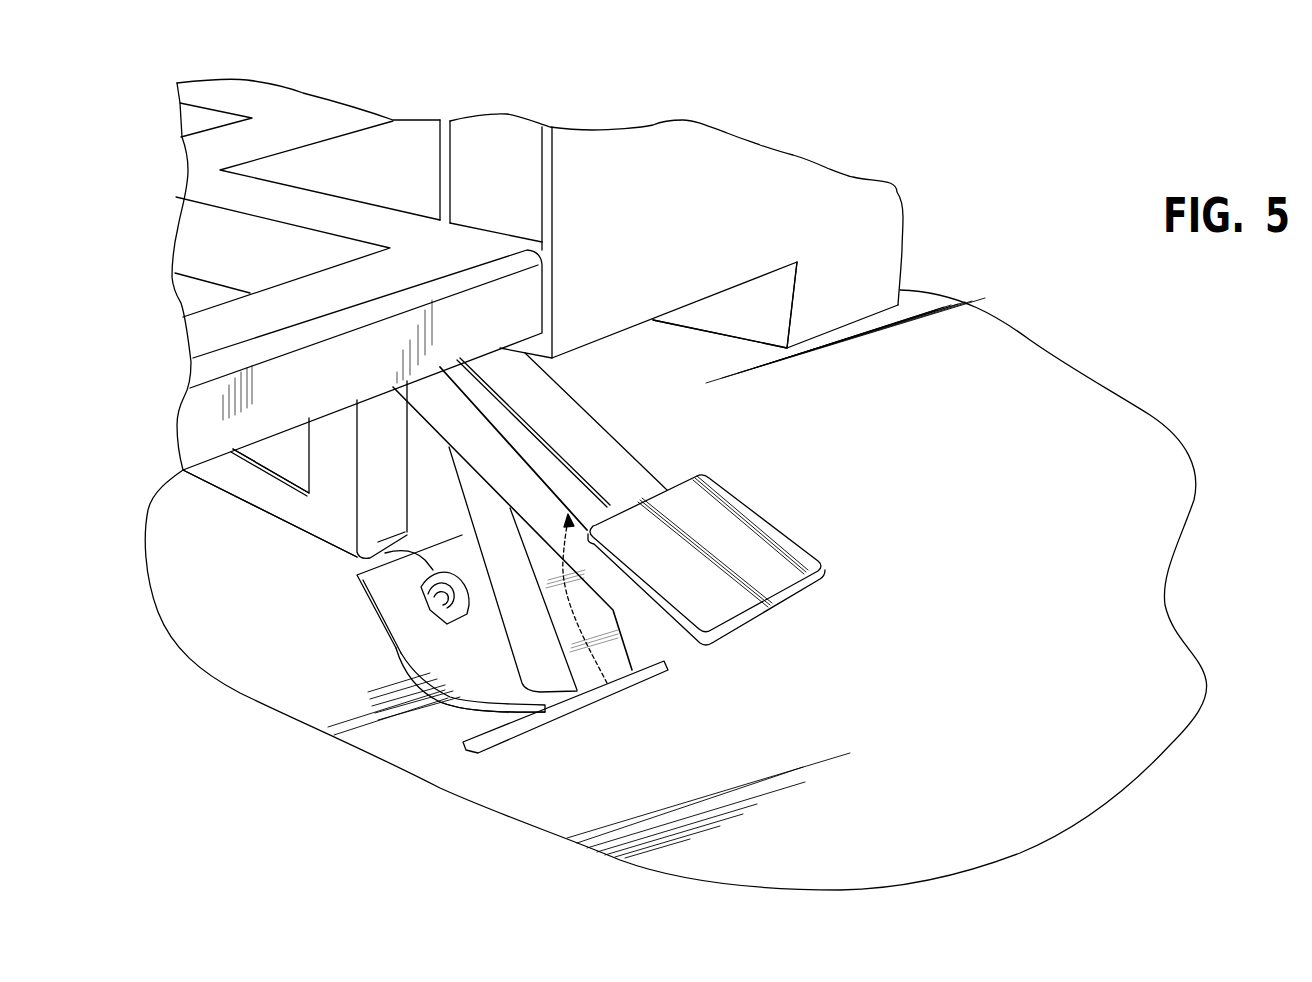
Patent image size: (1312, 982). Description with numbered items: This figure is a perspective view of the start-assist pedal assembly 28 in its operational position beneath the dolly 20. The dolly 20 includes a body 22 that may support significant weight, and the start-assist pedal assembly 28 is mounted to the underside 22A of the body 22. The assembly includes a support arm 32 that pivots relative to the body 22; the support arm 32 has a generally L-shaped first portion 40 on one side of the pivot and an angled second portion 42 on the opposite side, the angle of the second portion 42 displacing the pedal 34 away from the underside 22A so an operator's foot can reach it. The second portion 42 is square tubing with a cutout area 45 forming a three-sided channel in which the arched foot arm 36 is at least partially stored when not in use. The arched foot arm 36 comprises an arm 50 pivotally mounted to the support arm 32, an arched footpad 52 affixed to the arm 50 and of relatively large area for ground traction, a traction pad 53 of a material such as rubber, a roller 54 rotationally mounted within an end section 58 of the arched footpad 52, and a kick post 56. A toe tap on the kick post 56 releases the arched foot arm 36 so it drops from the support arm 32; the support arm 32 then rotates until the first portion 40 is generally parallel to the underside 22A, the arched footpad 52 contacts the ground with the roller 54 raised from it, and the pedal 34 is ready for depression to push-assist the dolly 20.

The dolly 20 is at (609, 115).
The body 22 is at (181, 407).
The underside 22A is at (684, 313).
The start-assist pedal assembly 28 is at (642, 499).
The support arm 32 is at (241, 499).
The pedal 34 is at (780, 536).
The arched foot arm 36 is at (401, 665).
The first portion 40 is at (267, 517).
The second portion 42 is at (569, 423).
The cutout area 45 is at (617, 694).
The arm 50 is at (482, 513).
The arched footpad 52 is at (430, 643).
The traction pad 53 is at (457, 710).
The roller 54 is at (424, 574).
The kick post 56 is at (517, 733).
The end section 58 is at (385, 553).